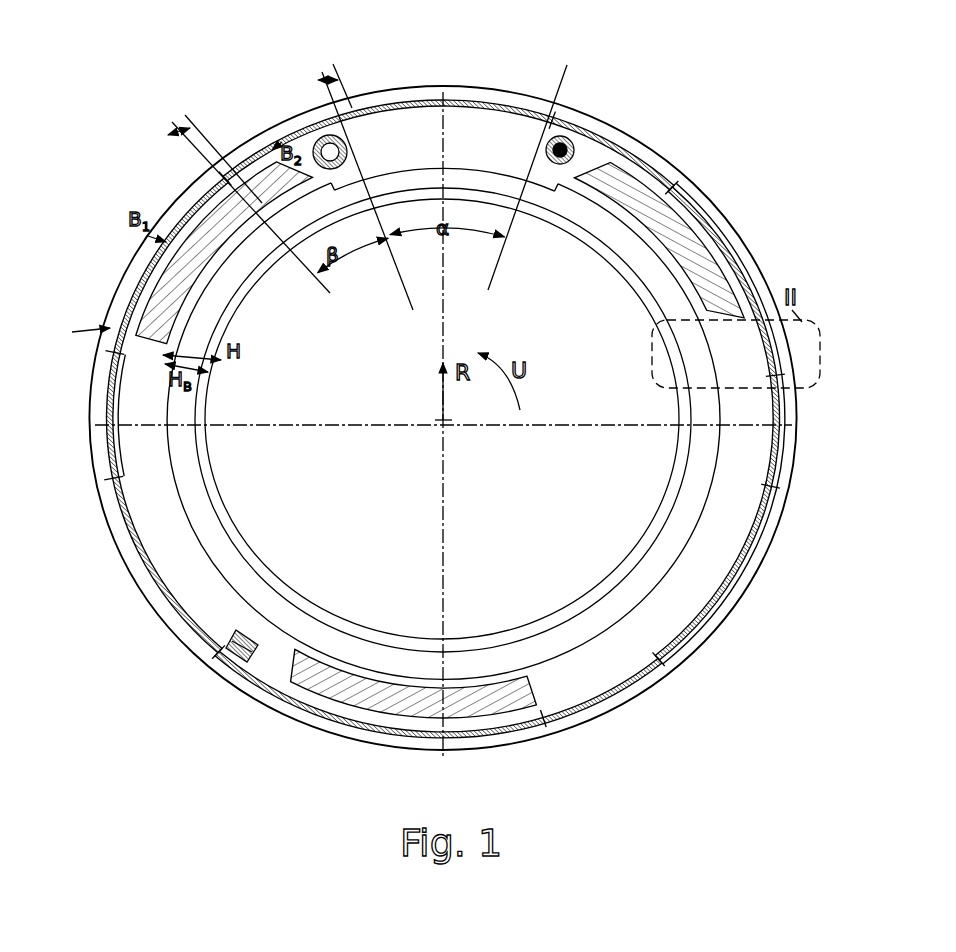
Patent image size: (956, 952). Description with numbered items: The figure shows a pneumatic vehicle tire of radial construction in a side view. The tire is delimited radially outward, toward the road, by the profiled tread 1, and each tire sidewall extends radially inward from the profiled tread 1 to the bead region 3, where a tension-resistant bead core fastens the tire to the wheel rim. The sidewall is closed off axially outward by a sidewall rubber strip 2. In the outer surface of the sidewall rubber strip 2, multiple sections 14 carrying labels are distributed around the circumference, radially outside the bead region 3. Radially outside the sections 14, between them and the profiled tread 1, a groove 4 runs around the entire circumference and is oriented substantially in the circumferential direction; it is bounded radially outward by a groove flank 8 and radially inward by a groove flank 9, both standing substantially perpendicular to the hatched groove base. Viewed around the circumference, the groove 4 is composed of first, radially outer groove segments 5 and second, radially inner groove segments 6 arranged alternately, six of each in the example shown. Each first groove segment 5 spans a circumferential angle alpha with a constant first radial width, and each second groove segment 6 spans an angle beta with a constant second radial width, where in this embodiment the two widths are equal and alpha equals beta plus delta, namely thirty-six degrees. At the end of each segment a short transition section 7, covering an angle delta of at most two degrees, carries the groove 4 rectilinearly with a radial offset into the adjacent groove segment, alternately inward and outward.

The profiled tread 1 is at (600, 148).
The sidewall rubber strip 2 is at (598, 163).
The bead region 3 is at (602, 245).
The groove 4 is at (702, 193).
The first groove segment 5 is at (482, 96).
The second groove segment 6 is at (268, 158).
The transition section 7 is at (556, 110).
The groove flank 8 is at (431, 100).
The groove flank 9 is at (384, 100).
The sections with labels 14 is at (320, 132).